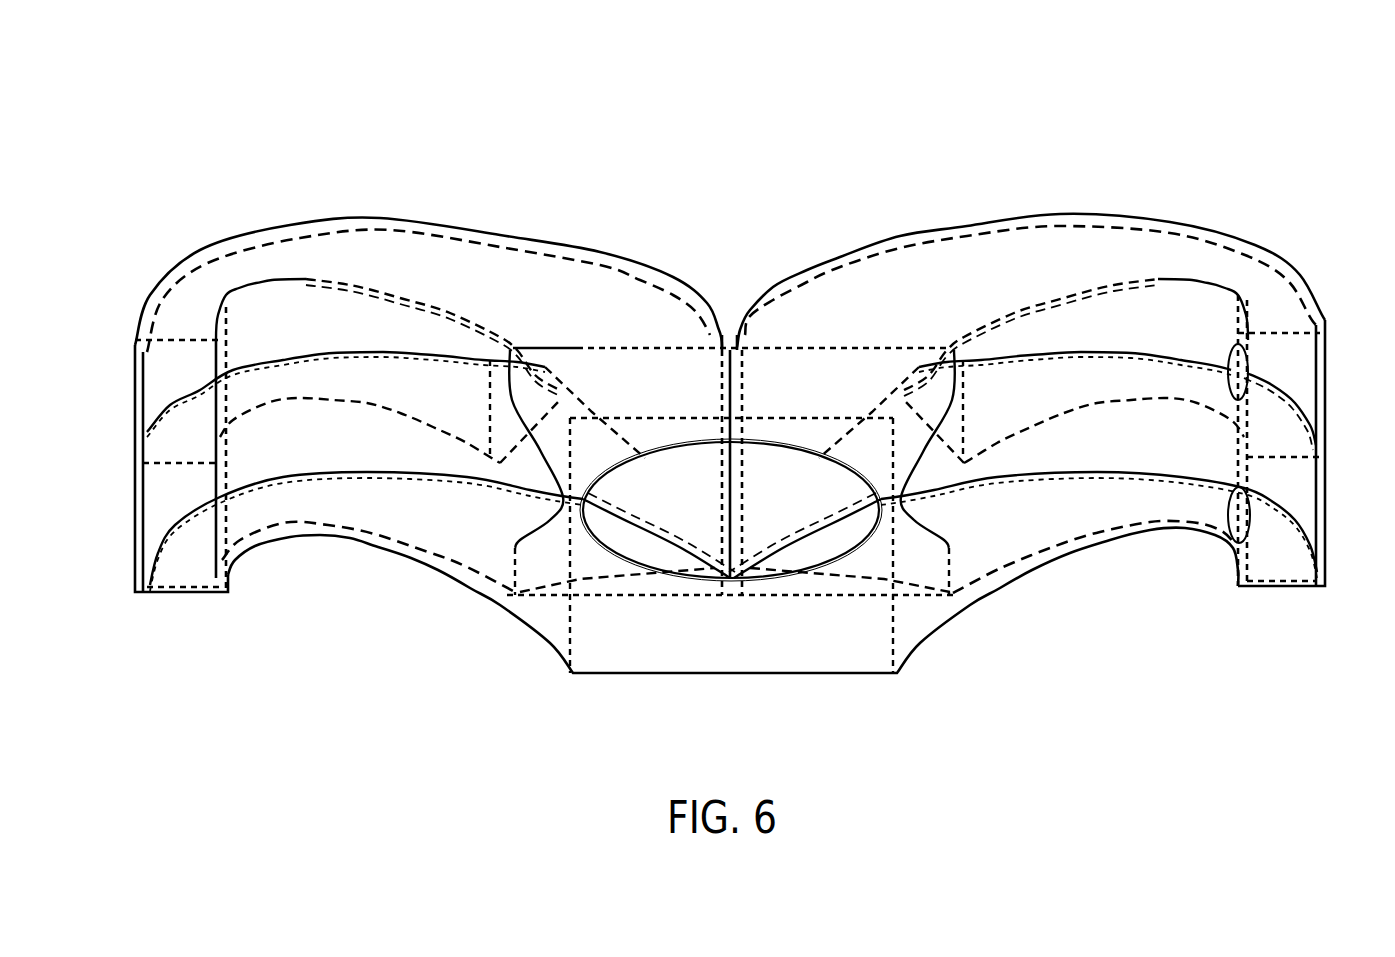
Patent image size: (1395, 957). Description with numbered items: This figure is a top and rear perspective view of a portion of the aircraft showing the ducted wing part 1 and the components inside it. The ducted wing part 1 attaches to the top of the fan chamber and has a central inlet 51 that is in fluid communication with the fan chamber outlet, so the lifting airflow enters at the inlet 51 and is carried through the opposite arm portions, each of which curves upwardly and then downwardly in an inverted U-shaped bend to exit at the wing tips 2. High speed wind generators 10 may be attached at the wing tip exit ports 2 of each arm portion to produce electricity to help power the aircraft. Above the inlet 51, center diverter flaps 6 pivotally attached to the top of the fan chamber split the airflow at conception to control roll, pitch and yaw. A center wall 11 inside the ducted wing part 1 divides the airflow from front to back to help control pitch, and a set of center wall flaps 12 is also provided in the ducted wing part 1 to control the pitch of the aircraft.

The ducted wing part 1 is at (1144, 172).
The wing tips 2 is at (130, 488).
The center diverter flaps 6 is at (808, 545).
The high speed wind generators 10 is at (1237, 377).
The center wall 11 is at (1074, 378).
The center wall flaps 12 is at (924, 403).
The inlet 51 is at (834, 557).